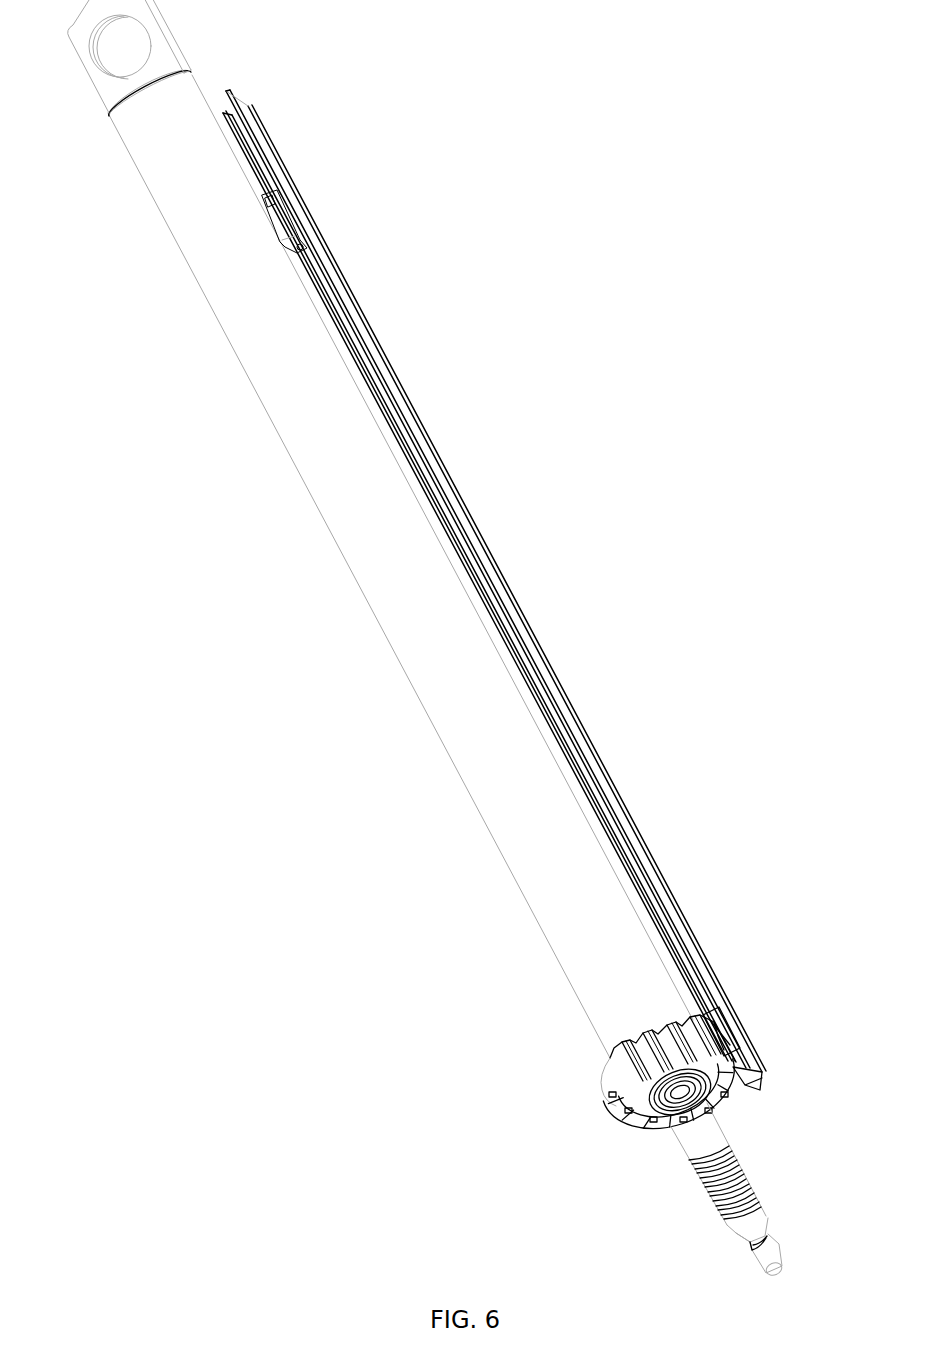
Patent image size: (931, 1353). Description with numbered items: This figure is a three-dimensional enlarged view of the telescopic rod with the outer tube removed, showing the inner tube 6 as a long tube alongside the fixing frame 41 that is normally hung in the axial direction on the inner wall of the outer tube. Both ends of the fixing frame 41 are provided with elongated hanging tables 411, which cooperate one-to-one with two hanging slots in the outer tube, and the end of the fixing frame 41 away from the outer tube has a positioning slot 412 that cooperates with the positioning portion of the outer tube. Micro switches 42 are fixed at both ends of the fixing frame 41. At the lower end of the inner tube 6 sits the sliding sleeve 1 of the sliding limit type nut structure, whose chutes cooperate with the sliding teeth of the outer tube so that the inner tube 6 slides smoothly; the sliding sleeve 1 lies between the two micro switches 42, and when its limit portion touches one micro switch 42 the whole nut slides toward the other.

The sliding sleeve 1 is at (613, 1092).
The inner tube 6 is at (433, 670).
The fixing frame 41 is at (526, 594).
The micro switch 42 is at (277, 217).
The hanging table 411 is at (723, 993).
The positioning slot 412 is at (757, 1088).